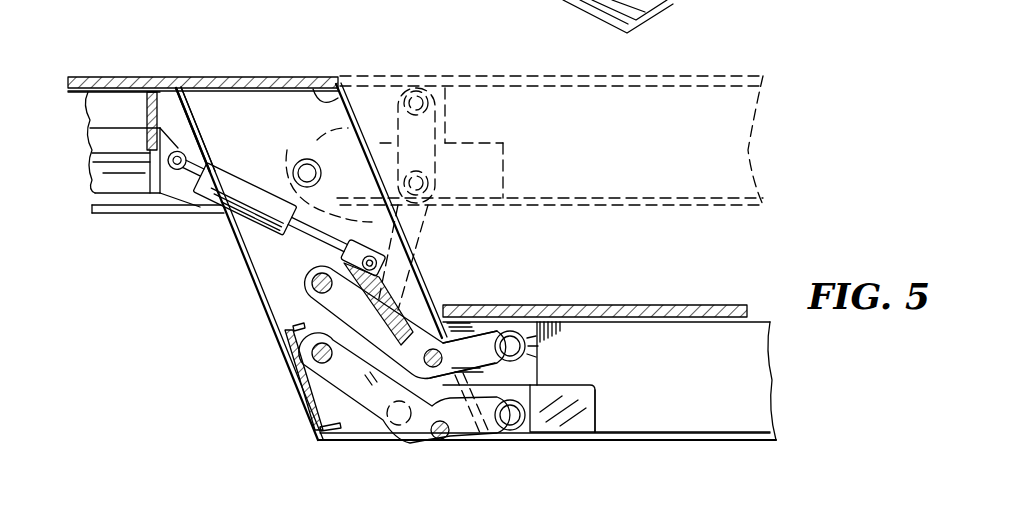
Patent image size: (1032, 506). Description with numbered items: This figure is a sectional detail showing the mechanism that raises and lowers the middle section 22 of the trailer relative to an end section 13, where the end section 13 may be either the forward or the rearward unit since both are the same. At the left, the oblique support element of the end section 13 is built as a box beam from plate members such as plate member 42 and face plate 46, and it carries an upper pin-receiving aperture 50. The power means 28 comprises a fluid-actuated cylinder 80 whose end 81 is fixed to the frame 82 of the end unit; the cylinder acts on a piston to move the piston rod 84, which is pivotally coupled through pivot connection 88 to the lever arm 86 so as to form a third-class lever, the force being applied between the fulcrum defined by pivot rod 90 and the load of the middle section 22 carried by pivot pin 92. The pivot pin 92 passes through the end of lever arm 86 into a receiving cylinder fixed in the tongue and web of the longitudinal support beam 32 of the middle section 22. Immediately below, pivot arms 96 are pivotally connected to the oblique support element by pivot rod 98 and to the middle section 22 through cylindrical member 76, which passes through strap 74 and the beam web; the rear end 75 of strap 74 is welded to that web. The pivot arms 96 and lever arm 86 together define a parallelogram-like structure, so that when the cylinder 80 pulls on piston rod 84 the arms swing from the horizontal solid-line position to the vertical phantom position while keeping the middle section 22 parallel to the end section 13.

The end section 13 is at (134, 72).
The middle section 22 is at (674, 301).
The power means 28 is at (222, 236).
The longitudinal support beam 32 is at (627, 350).
The plate member 42 is at (193, 113).
The face plate 46 is at (334, 99).
The pin-receiving aperture 50 is at (305, 158).
The strap 74 is at (546, 424).
The rear end of strap 75 is at (597, 403).
The cylindrical member 76 is at (468, 325).
The fluid-actuated cylinder 80 is at (230, 180).
The end of cylinder 81 is at (188, 170).
The frame 82 is at (161, 140).
The piston rod 84 is at (307, 235).
The lever arm 86 is at (327, 307).
The pivot connection 88 is at (397, 233).
The pivot rod 90 is at (307, 281).
The pivot pin 92 is at (510, 338).
The pivot arm 96 is at (343, 380).
The pivot rod 98 is at (313, 357).